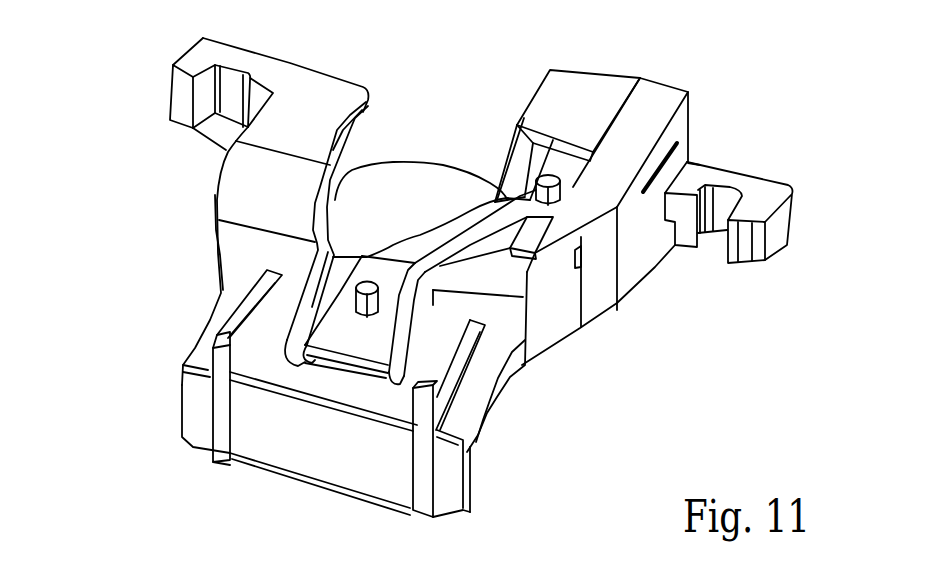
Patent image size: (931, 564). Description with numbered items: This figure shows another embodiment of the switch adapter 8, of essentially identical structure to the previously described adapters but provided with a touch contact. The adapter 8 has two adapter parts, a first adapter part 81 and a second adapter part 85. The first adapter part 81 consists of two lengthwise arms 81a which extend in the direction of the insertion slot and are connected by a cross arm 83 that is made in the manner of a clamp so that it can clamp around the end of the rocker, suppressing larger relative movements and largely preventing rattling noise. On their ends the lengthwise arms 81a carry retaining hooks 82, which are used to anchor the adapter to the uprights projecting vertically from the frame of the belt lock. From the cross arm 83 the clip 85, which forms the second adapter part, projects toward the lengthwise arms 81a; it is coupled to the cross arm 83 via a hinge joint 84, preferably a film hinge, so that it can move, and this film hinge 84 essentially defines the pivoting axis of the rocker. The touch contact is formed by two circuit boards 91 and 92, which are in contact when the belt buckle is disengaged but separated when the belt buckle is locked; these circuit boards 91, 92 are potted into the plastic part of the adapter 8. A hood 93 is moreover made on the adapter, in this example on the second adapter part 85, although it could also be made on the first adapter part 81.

The adapter 8 is at (140, 258).
The first adapter part 81 is at (477, 437).
The lengthwise arms 81a is at (333, 117).
The retaining hooks 82 is at (236, 50).
The cross arm 83 is at (353, 462).
The hinge joint 84 is at (340, 358).
The clip 85 is at (390, 197).
The circuit board 91 is at (578, 256).
The circuit board 92 is at (457, 232).
The hood 93 is at (577, 87).